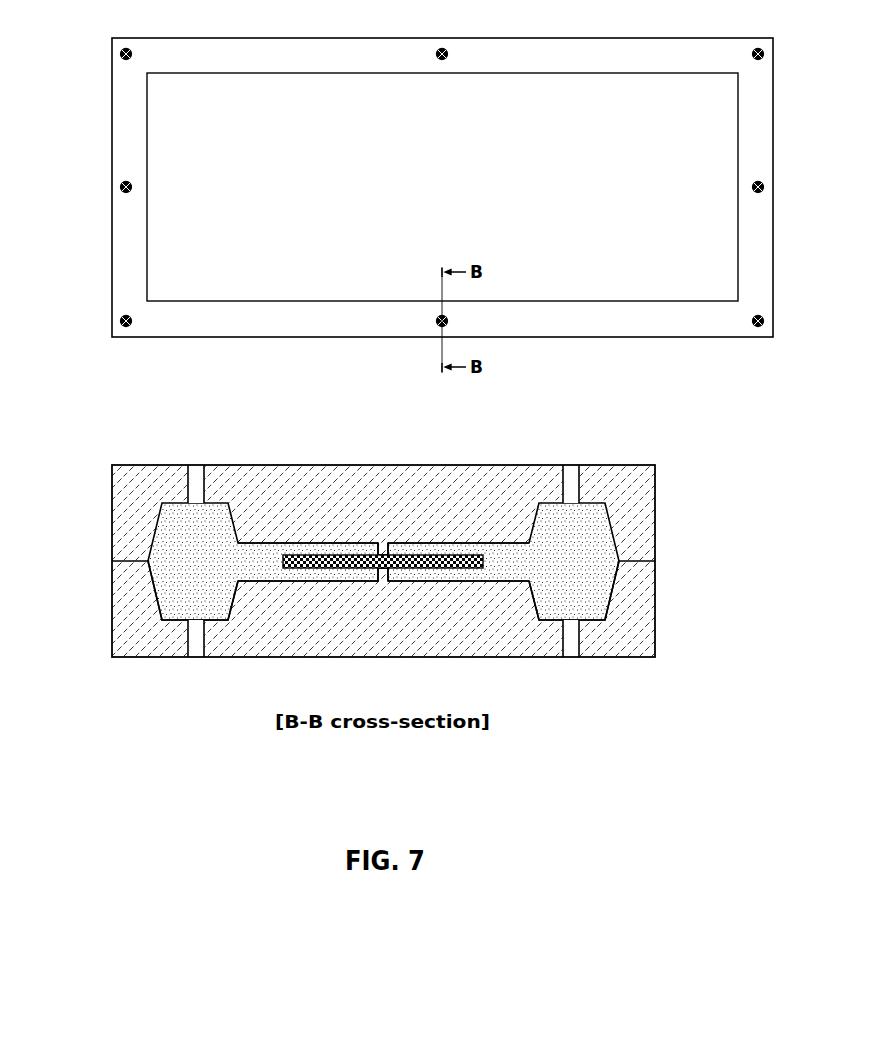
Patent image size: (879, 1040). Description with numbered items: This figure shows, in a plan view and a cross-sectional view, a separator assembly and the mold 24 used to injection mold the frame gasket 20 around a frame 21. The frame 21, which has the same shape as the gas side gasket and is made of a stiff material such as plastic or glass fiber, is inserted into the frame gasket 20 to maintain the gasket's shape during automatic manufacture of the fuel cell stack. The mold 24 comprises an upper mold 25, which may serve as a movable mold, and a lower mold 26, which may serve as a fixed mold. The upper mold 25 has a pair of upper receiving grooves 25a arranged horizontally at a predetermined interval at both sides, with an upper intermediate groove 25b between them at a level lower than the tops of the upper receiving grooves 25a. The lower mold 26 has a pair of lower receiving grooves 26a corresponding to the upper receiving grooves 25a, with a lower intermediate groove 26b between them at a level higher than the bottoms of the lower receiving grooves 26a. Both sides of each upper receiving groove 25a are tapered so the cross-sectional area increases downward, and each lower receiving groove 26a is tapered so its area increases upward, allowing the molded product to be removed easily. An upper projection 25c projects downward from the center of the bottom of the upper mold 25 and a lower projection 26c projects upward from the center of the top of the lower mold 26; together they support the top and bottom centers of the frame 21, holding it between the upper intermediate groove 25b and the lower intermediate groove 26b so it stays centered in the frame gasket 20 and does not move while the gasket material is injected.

The frame gasket 20 is at (182, 317).
The frame 21 is at (443, 557).
The mold 24 is at (399, 561).
The upper mold 25 is at (633, 543).
The lower mold 26 is at (637, 595).
The upper receiving grooves 25a is at (162, 535).
The lower receiving grooves 26a is at (162, 603).
The upper intermediate groove 25b is at (505, 547).
The lower intermediate groove 26b is at (490, 580).
The upper projection 25c is at (380, 547).
The lower projection 26c is at (355, 577).